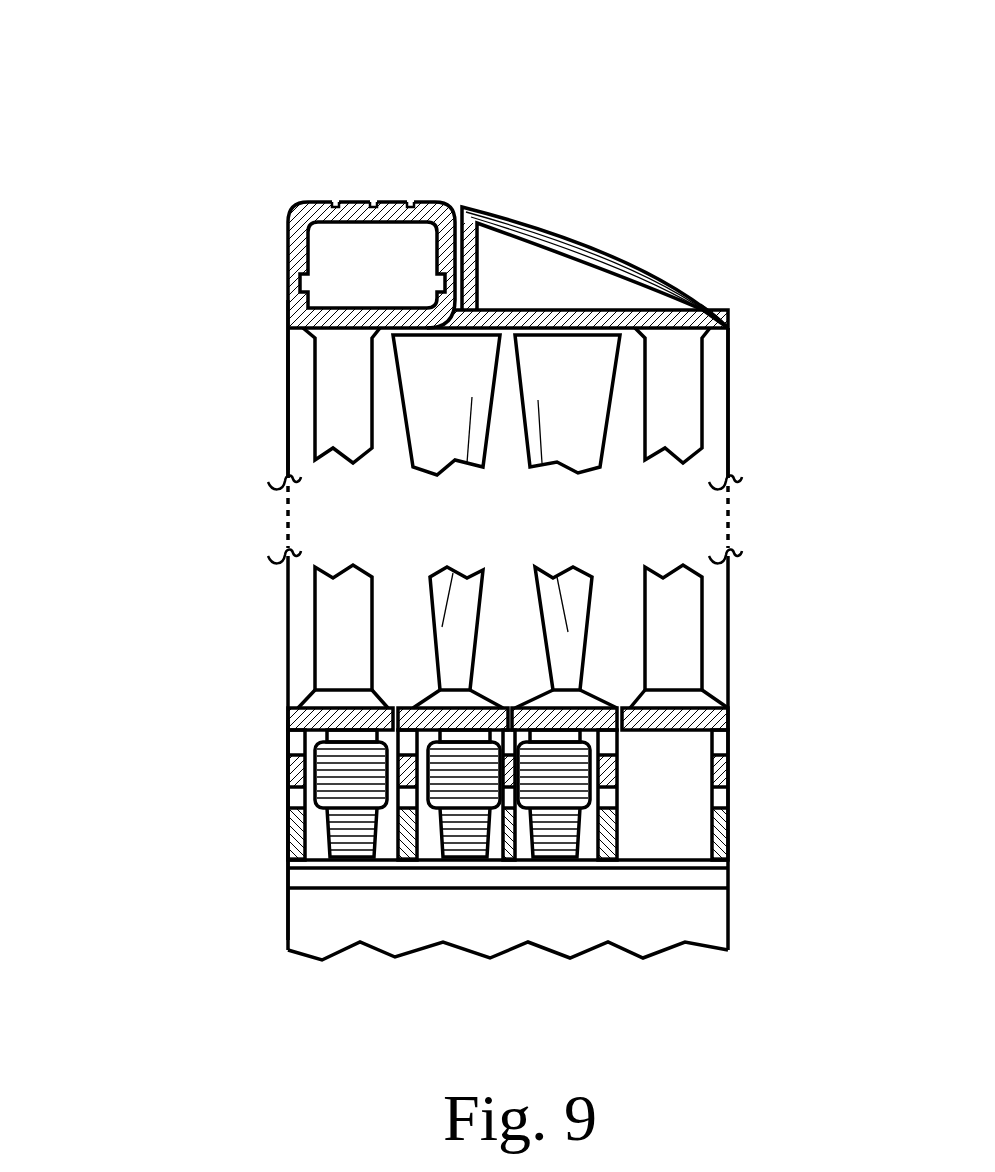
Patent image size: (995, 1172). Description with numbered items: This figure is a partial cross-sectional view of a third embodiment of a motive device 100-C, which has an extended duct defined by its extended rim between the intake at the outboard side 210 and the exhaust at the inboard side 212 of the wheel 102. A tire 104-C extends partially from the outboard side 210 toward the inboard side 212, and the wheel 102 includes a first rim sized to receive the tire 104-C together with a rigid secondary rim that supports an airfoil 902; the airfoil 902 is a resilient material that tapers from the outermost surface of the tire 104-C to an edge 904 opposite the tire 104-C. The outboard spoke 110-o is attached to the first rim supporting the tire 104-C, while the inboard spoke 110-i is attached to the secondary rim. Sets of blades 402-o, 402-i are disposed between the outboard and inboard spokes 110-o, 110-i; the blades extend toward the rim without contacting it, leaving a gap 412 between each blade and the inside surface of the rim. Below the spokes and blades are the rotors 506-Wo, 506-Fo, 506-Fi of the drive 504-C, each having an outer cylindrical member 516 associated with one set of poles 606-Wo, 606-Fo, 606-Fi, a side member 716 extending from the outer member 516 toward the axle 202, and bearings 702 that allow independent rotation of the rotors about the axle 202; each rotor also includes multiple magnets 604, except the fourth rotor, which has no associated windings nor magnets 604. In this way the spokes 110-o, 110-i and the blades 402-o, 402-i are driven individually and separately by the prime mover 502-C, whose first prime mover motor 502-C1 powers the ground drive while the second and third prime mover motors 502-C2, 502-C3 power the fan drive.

The motive device 100-C is at (232, 72).
The tire 104-C is at (345, 200).
The airfoil 902 is at (593, 238).
The edge 904 is at (723, 313).
The gap 412 is at (537, 310).
The wheel 102 is at (728, 370).
The inboard side 212 is at (730, 430).
The outboard side 210 is at (286, 430).
The outboard blades 402-o is at (470, 465).
The inboard blades 402-i is at (577, 568).
The drive 504-C is at (170, 506).
The outboard spoke 110-o is at (315, 615).
The inboard spoke 110-i is at (703, 620).
The rotor 506-Fo is at (413, 707).
The rotor 506-Fi is at (516, 707).
The outer member 516 is at (290, 692).
The poles 606-Wo is at (292, 765).
The rotor 506-Wo is at (290, 795).
The prime mover 502-C is at (153, 777).
The magnets 604 is at (618, 758).
The side member 716 is at (730, 768).
The first prime mover motor 502-C1 is at (350, 902).
The poles 606-Fo is at (467, 860).
The poles 606-Fi is at (550, 860).
The bearings 702 is at (290, 848).
The axle 202 is at (290, 915).
The second prime mover motor 502-C2 is at (465, 960).
The third prime mover motor 502-C3 is at (623, 907).